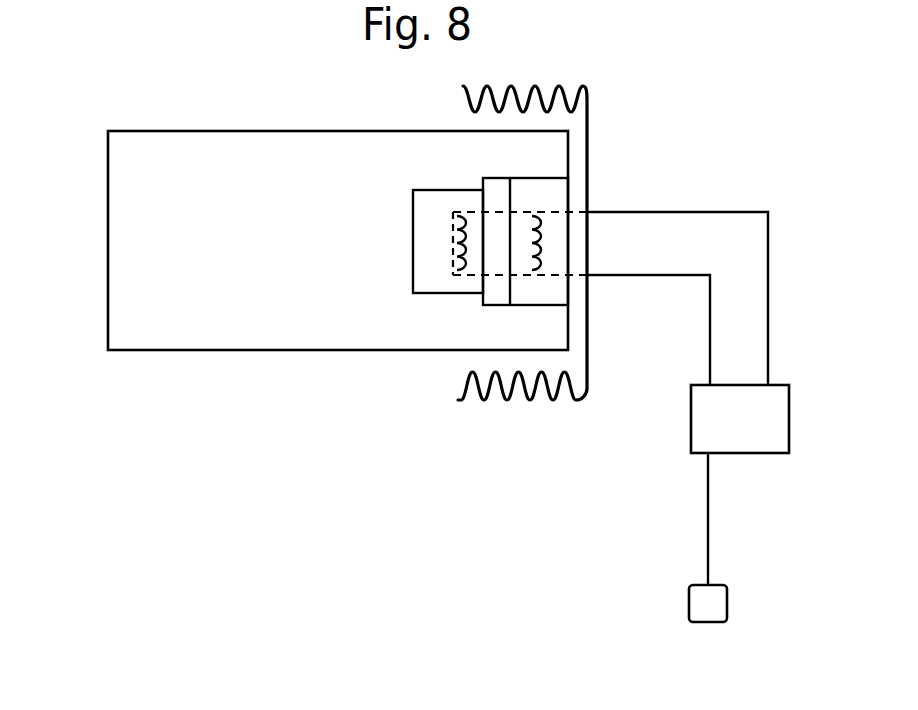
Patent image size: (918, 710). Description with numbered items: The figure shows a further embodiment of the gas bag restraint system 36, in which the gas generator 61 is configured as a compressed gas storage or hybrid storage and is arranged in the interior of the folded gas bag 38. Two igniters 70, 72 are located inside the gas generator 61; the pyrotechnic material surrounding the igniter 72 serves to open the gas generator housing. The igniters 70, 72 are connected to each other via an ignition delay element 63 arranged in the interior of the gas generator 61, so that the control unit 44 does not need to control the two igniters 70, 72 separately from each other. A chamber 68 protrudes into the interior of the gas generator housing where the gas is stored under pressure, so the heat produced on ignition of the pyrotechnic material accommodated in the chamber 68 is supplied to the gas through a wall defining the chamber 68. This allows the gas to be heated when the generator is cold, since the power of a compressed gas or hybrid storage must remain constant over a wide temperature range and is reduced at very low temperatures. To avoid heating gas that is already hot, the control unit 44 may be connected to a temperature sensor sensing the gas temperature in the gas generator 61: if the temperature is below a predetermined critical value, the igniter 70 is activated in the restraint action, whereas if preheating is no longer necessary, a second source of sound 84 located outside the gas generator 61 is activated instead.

The gas bag restraint system 36 is at (272, 450).
The folded gas bag 38 is at (506, 403).
The control unit 44 is at (772, 417).
The gas generator 61 is at (185, 327).
The ignition delay element 63 is at (488, 180).
The chamber 68 is at (542, 286).
The igniter 70 is at (522, 213).
The igniter 72 is at (448, 247).
The second source of sound 84 is at (713, 606).